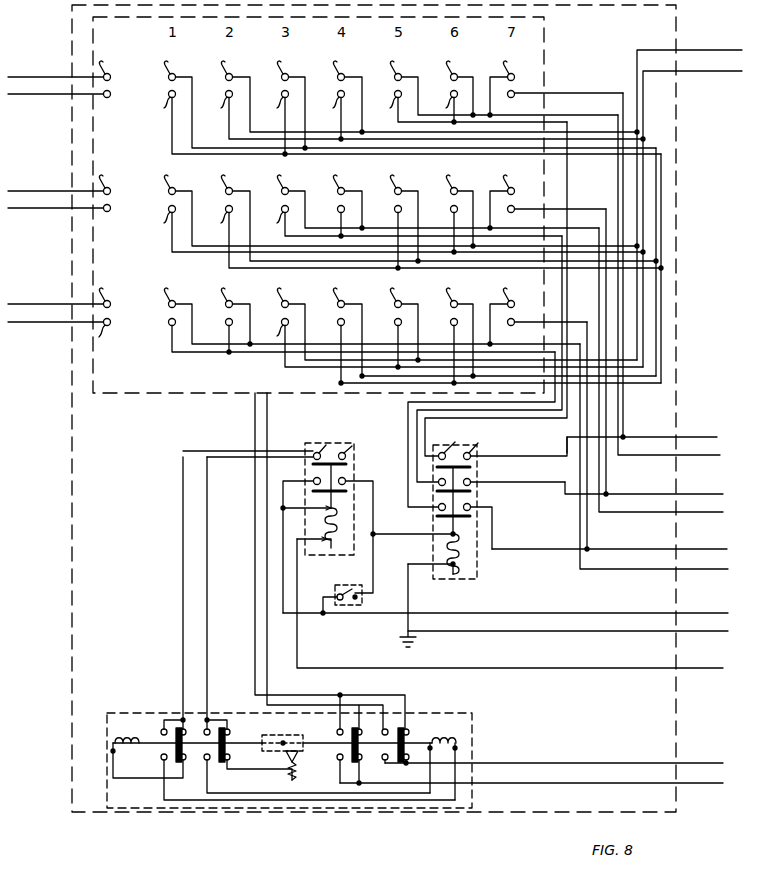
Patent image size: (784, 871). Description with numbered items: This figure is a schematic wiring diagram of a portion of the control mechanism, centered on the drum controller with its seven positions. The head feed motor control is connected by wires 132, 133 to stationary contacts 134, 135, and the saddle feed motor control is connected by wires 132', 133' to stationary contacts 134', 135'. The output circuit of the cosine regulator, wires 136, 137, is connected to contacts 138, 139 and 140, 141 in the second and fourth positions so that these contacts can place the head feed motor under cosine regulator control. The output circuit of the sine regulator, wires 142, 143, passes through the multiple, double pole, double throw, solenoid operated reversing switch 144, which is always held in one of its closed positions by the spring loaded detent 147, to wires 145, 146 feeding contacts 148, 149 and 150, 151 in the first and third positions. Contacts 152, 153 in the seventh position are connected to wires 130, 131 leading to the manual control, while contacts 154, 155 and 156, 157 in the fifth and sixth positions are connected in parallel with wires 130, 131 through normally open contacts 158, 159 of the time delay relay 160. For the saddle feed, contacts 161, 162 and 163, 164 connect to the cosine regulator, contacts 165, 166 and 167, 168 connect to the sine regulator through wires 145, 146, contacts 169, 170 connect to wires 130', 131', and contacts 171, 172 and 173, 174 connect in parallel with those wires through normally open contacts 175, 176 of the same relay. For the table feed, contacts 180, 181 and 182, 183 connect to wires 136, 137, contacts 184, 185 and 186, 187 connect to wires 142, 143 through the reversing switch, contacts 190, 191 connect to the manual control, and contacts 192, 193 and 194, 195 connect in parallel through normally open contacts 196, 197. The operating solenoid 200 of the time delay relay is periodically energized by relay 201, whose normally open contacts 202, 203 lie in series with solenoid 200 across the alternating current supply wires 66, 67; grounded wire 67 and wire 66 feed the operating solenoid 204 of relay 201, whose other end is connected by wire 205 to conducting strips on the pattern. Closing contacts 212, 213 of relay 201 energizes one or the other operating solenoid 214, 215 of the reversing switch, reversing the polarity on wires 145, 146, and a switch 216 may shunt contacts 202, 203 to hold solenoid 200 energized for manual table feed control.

The wire 66 is at (721, 611).
The wire 67 is at (698, 629).
The wire 130 is at (642, 309).
The wire 130' is at (641, 388).
The wire 131 is at (669, 294).
The wire 131' is at (661, 378).
The wire 132 is at (55, 65).
The wire 133 is at (55, 107).
The wire 132' is at (55, 179).
The wire 133' is at (55, 221).
The stationary contact 134 is at (117, 68).
The stationary contact 135 is at (127, 94).
The stationary contact 134' is at (119, 182).
The stationary contact 135' is at (129, 208).
The wire 136 is at (688, 50).
The wire 137 is at (700, 74).
The contact 138 is at (430, 95).
The contact 139 is at (420, 116).
The contact 140 is at (352, 95).
The contact 141 is at (326, 116).
The wire 142 is at (656, 762).
The wire 143 is at (652, 785).
The reversing switch 144 is at (158, 709).
The wire 145 is at (253, 419).
The wire 146 is at (268, 419).
The spring loaded detent 147 is at (287, 762).
The contact 148 is at (410, 102).
The contact 149 is at (399, 123).
The contact 150 is at (296, 103).
The contact 151 is at (270, 124).
The contact 152 is at (515, 87).
The contact 153 is at (509, 98).
The contact 154 is at (504, 86).
The contact 155 is at (465, 107).
The contact 156 is at (465, 87).
The contact 157 is at (439, 108).
The normally open contact 158 is at (454, 442).
The normally open contact 159 is at (478, 443).
The time delay relay 160 is at (480, 565).
The contact 161 is at (401, 209).
The contact 162 is at (391, 230).
The contact 163 is at (465, 209).
The contact 164 is at (451, 211).
The contact 165 is at (439, 217).
The contact 166 is at (429, 238).
The contact 167 is at (409, 217).
The contact 168 is at (395, 211).
The contact 169 is at (515, 200).
The contact 170 is at (509, 213).
The contact 171 is at (438, 199).
The contact 172 is at (406, 221).
The contact 173 is at (352, 200).
The contact 174 is at (338, 211).
The normally open contact 175 is at (438, 485).
The normally open contact 176 is at (470, 480).
The contact 180 is at (457, 322).
The contact 181 is at (447, 343).
The contact 182 is at (409, 323).
The contact 183 is at (395, 327).
The contact 184 is at (494, 331).
The contact 185 is at (338, 327).
The contact 186 is at (465, 331).
The contact 187 is at (451, 327).
The contact 190 is at (515, 315).
The contact 191 is at (509, 326).
The contact 192 is at (372, 314).
The contact 193 is at (168, 322).
The contact 194 is at (240, 315).
The contact 195 is at (226, 327).
The normally open contact 196 is at (438, 511).
The normally open contact 197 is at (470, 505).
The operating solenoid 200 is at (458, 568).
The relay 201 is at (328, 445).
The normally open contact 202 is at (306, 478).
The normally open contact 203 is at (345, 478).
The operating solenoid 204 is at (333, 540).
The wire 205 is at (663, 669).
The normally open contact 212 is at (310, 447).
The normally open contact 213 is at (352, 446).
The operating solenoid 214 is at (144, 734).
The operating solenoid 215 is at (462, 734).
The switch 216 is at (340, 605).